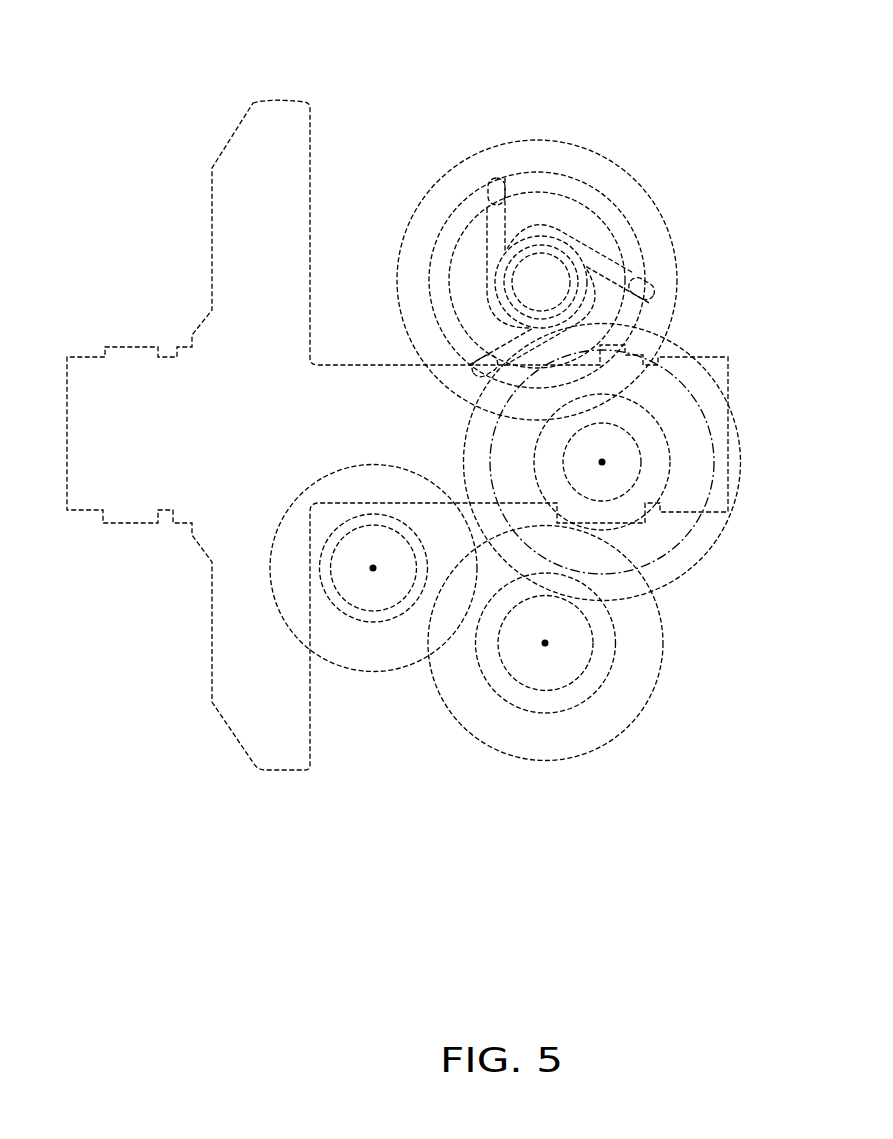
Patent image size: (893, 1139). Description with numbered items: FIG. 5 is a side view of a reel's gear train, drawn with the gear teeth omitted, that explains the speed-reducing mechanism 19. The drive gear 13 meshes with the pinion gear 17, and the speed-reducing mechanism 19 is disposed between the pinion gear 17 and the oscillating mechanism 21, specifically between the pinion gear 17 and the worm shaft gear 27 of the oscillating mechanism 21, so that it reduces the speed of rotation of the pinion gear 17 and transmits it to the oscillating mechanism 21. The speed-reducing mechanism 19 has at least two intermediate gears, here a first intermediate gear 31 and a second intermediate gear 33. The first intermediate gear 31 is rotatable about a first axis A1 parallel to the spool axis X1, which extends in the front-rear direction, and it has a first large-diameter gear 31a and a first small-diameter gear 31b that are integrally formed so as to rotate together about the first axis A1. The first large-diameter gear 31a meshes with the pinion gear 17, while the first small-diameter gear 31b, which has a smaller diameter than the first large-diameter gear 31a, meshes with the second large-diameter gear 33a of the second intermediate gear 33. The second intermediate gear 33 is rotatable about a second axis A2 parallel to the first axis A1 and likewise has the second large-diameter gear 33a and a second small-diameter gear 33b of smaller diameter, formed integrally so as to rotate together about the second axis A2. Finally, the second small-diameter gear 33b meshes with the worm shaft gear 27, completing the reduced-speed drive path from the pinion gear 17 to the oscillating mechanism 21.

The drive gear 13 is at (260, 155).
The pinion gear 17 is at (327, 618).
The speed-reducing mechanism 19 is at (614, 566).
The oscillating mechanism 21 is at (569, 219).
The worm shaft gear 27 is at (609, 142).
The first intermediate gear 31 is at (556, 697).
The first large-diameter gear 31a is at (550, 738).
The first small-diameter gear 31b is at (510, 693).
The second intermediate gear 33 is at (627, 433).
The second large-diameter gear 33a is at (703, 532).
The second small-diameter gear 33b is at (642, 433).
The first axis A1 is at (545, 643).
The second axis A2 is at (598, 462).
The spool axis X1 is at (372, 588).